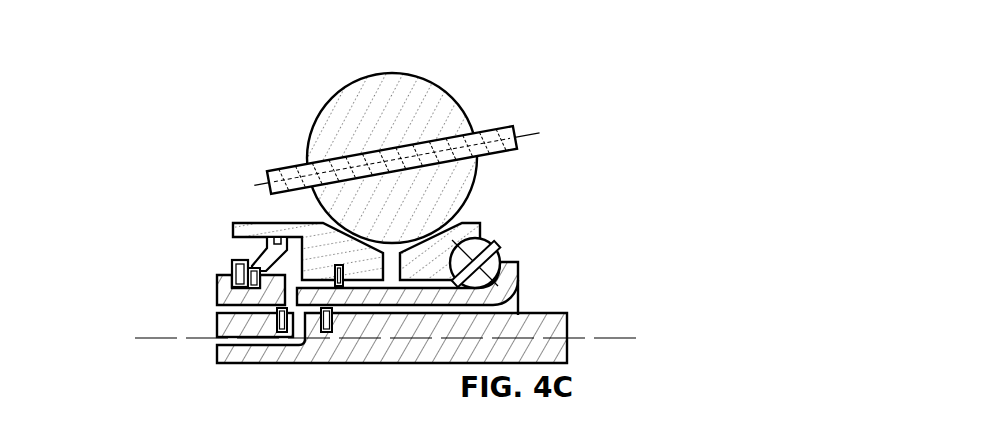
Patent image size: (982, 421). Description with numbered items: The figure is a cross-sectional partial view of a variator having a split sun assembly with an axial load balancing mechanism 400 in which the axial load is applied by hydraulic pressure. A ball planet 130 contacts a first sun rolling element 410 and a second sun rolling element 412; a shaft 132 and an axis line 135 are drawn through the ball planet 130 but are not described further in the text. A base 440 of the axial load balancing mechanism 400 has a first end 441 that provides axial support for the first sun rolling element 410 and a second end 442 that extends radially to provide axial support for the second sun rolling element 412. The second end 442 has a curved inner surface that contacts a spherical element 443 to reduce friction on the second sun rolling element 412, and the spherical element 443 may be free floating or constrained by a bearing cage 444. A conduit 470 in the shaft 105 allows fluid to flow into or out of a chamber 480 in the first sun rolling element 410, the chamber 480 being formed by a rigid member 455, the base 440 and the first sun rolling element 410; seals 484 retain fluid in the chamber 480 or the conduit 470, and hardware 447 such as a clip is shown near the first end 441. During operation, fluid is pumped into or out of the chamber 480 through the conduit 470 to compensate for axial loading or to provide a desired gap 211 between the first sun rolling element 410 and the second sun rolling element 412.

The shaft 105 is at (567, 322).
The ball planet 130 is at (392, 73).
The shaft 132 is at (530, 134).
The shaft axis 135 is at (486, 122).
The gap 211 is at (391, 281).
The axial load balancing mechanism 400 is at (622, 168).
The first sun rolling element 410 is at (240, 222).
The second sun rolling element 412 is at (482, 224).
The base 440 is at (217, 300).
The first end 441 is at (175, 309).
The second end 442 is at (545, 288).
The spherical element 443 is at (499, 251).
The bearing cage 444 is at (498, 244).
The hardware 447 is at (232, 272).
The rigid member 455 is at (257, 249).
The conduit 470 is at (205, 347).
The chamber 480 is at (280, 275).
The seals 484 is at (340, 288).